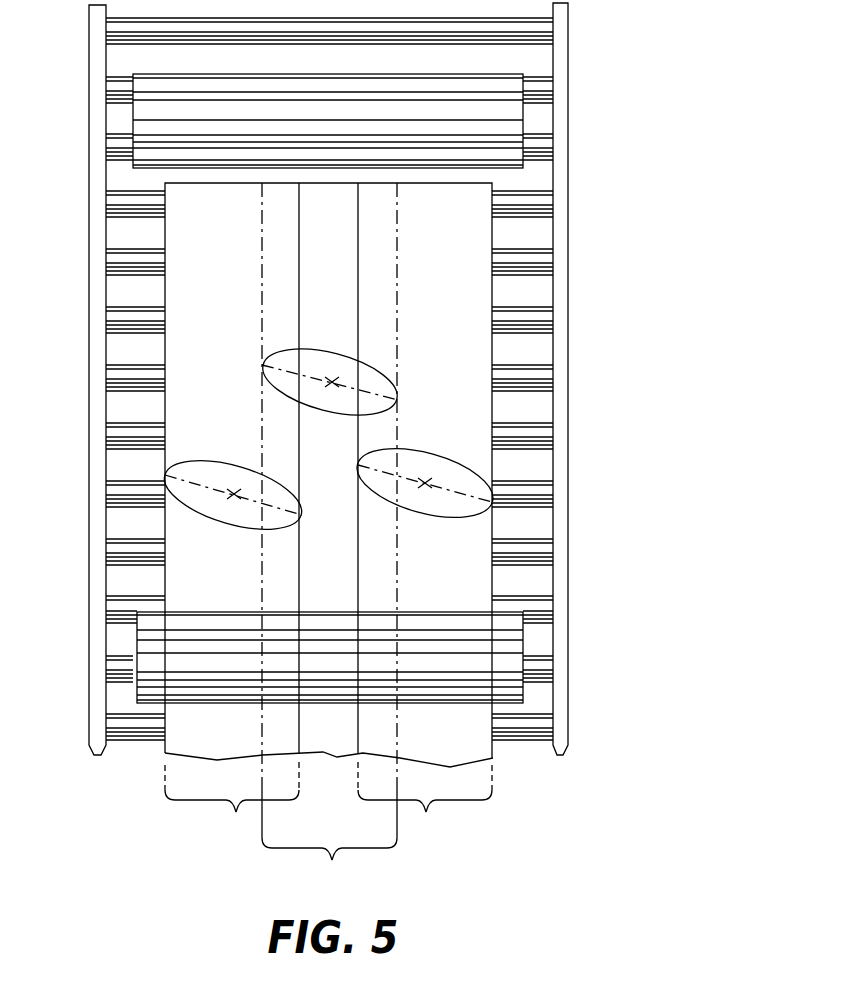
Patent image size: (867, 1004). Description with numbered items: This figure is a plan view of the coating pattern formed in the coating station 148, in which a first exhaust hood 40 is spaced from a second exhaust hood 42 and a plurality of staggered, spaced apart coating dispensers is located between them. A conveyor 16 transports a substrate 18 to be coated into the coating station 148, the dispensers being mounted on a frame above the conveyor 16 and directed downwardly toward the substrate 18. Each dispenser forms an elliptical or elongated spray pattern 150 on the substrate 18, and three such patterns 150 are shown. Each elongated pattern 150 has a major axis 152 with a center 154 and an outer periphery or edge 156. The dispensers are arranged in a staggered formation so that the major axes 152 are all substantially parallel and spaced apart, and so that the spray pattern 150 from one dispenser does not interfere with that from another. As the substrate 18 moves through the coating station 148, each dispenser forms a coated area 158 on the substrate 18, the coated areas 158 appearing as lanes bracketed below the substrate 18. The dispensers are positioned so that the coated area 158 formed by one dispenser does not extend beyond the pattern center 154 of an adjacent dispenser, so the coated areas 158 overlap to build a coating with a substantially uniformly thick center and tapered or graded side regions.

The conveyor 16 is at (558, 168).
The substrate 18 is at (473, 230).
The first exhaust hood 40 is at (523, 643).
The second exhaust hood 42 is at (505, 73).
The coating station 148 is at (680, 253).
The elongated spray pattern 150 is at (281, 395).
The major axis 152 is at (371, 390).
The center 154 is at (332, 382).
The outer periphery 156 is at (262, 365).
The coated area 158 is at (328, 830).